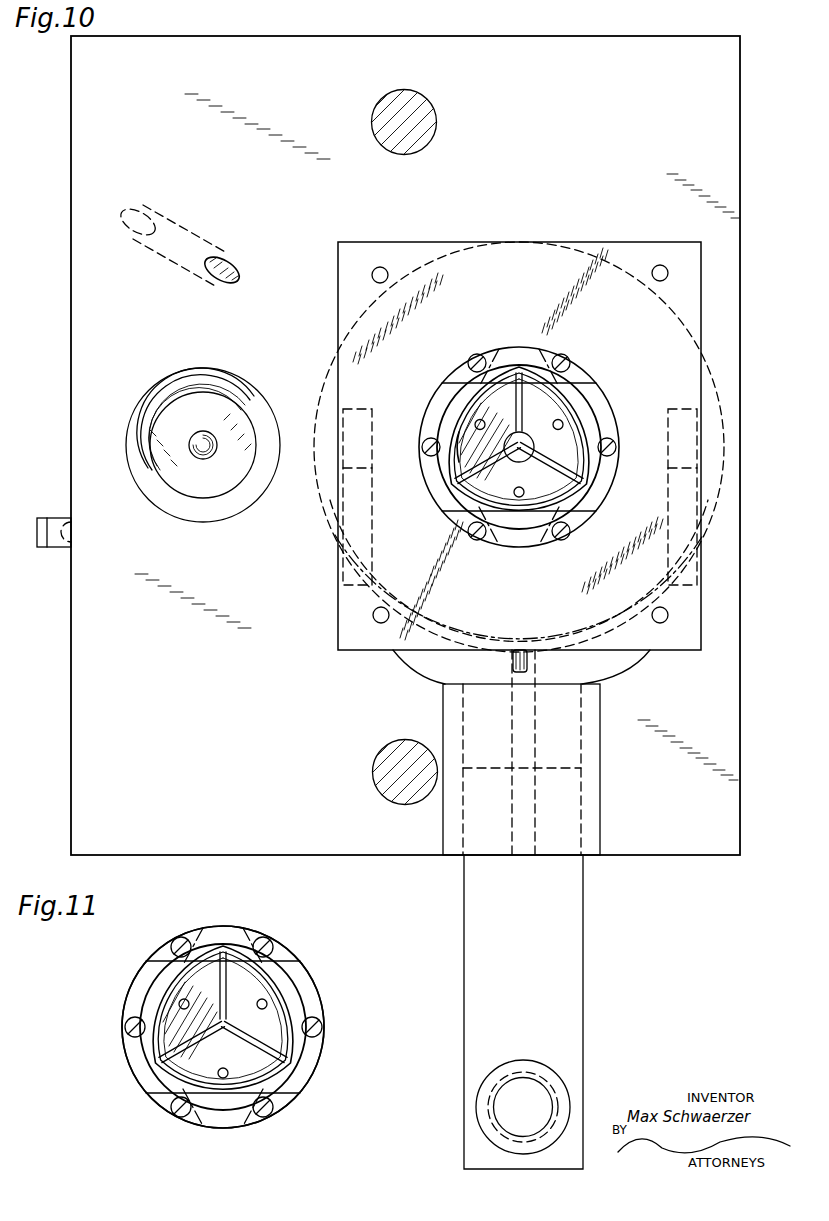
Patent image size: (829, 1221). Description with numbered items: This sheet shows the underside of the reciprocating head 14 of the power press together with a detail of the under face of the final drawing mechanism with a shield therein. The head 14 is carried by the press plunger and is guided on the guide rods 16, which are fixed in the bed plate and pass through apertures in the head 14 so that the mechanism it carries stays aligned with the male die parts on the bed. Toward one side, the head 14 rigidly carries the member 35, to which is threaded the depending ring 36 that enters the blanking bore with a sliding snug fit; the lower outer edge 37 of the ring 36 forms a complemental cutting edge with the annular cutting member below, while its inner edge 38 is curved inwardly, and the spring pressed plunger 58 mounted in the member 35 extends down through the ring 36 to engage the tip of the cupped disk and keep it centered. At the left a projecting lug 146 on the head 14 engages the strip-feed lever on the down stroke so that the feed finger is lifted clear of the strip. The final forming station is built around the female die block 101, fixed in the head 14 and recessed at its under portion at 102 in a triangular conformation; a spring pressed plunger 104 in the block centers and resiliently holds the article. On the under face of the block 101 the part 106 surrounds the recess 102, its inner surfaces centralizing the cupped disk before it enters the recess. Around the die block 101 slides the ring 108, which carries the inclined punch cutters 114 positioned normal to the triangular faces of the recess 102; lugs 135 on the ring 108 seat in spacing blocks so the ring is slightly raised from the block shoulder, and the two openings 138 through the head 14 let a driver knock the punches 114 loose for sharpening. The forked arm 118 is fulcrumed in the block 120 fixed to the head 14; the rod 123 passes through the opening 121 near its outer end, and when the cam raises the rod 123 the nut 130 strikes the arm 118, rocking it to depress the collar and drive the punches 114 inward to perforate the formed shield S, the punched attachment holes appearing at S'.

In FIG. 10, the head 14 is at (85, 742).
In FIG. 10, the guide rods 16 is at (422, 104).
In FIG. 10, the member 35 is at (232, 466).
In FIG. 10, the ring 36 is at (210, 378).
In FIG. 10, the lower outer edge 37 is at (266, 406).
In FIG. 10, the inner edge 38 is at (180, 392).
In FIG. 10, the spring pressed plunger 58 is at (203, 460).
In FIG. 10, the female die block 101 is at (519, 481).
In FIG. 11, the female die block 101 is at (257, 1027).
In FIG. 10, the recess 102 is at (533, 460).
In FIG. 11, the recess 102 is at (262, 1027).
In FIG. 10, the spring pressed plunger 104 is at (510, 502).
In FIG. 10, the part 106 is at (538, 447).
In FIG. 11, the part 106 is at (239, 1027).
In FIG. 10, the ring 108 is at (690, 312).
In FIG. 10, the punch cutters 114 is at (498, 456).
In FIG. 10, the forked arm 118 is at (342, 520).
In FIG. 10, the block 120 is at (598, 695).
In FIG. 10, the opening 121 is at (548, 1086).
In FIG. 10, the rod 123 is at (507, 1100).
In FIG. 10, the nut 130 is at (565, 1105).
In FIG. 10, the lugs 135 is at (374, 272).
In FIG. 10, the openings 138 is at (195, 242).
In FIG. 10, the lug 146 is at (40, 530).
In FIG. 11, the workpiece S is at (223, 983).
In FIG. 11, the workpiece pins S' is at (219, 1062).